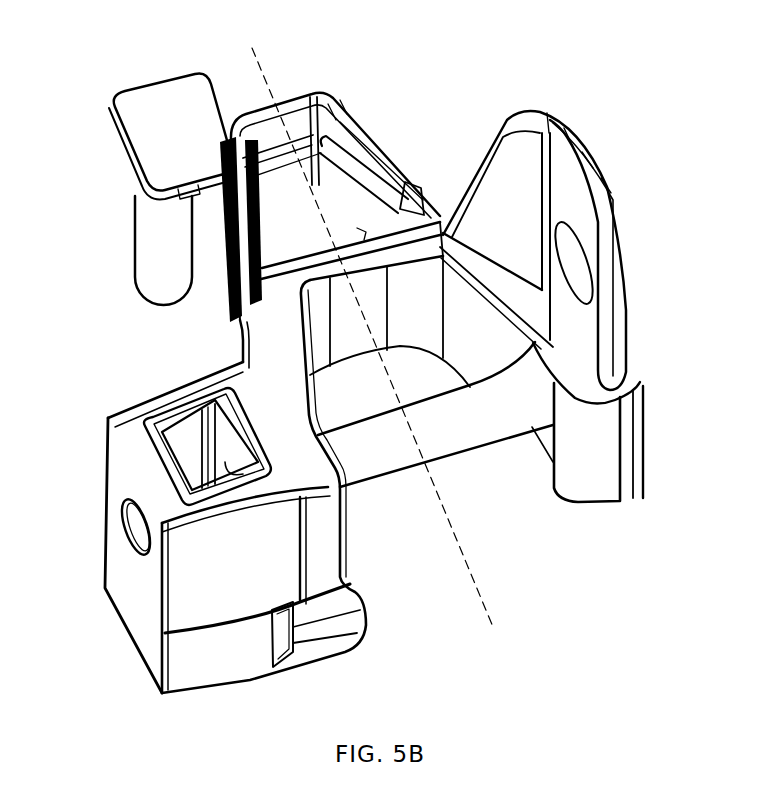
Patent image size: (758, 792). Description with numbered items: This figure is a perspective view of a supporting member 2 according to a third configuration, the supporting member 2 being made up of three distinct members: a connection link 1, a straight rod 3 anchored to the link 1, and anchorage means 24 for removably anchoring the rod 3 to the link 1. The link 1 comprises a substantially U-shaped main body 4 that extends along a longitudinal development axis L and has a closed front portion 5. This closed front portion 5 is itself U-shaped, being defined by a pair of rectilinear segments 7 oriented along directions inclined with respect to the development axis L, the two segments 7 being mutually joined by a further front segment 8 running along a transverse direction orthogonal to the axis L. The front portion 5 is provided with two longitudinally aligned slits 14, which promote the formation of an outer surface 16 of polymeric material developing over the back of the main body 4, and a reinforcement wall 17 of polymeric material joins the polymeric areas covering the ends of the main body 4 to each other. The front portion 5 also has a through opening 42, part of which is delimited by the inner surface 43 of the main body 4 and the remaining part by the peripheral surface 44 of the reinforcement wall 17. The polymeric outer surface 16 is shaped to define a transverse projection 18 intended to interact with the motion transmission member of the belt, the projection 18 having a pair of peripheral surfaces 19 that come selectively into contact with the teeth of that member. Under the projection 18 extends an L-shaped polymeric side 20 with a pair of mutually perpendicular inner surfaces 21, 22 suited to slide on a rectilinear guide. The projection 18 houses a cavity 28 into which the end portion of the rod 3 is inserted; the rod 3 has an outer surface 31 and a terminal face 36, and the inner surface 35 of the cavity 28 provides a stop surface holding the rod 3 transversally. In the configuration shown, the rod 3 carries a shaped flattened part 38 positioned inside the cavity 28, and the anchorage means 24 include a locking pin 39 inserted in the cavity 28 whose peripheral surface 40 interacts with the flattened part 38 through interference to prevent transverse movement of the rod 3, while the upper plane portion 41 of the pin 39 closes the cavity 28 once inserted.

The link 1 is at (568, 90).
The supporting member 2 is at (95, 682).
The rod 3 is at (627, 393).
The main body 4 is at (425, 112).
The closed front portion 5 is at (357, 103).
The rectilinear segments 7 is at (380, 132).
The front segment 8 is at (297, 108).
The slits 14 is at (383, 168).
The outer surface of polymeric material 16 is at (254, 346).
The reinforcement wall 17 is at (323, 252).
The transverse projection 18 is at (88, 442).
The peripheral surfaces 19 is at (229, 585).
The side 20 is at (375, 562).
The inner surface 21 is at (283, 642).
The inner surface 22 is at (350, 597).
The anchorage means 24 is at (104, 191).
The cavity 28 is at (246, 459).
The outer surface of the rod 31 is at (491, 424).
The inner surface of the cavity 35 is at (231, 448).
The terminal face of the rod 36 is at (133, 551).
The flattened part 38 is at (199, 515).
The locking pin 39 is at (108, 242).
The peripheral surface of the pin 40 is at (154, 258).
The upper plane portion 41 is at (154, 141).
The opening 42 is at (276, 255).
The inner surface of the main body 43 is at (269, 141).
The peripheral surface of the reinforcement wall 44 is at (373, 247).
The longitudinal development axis L is at (488, 603).